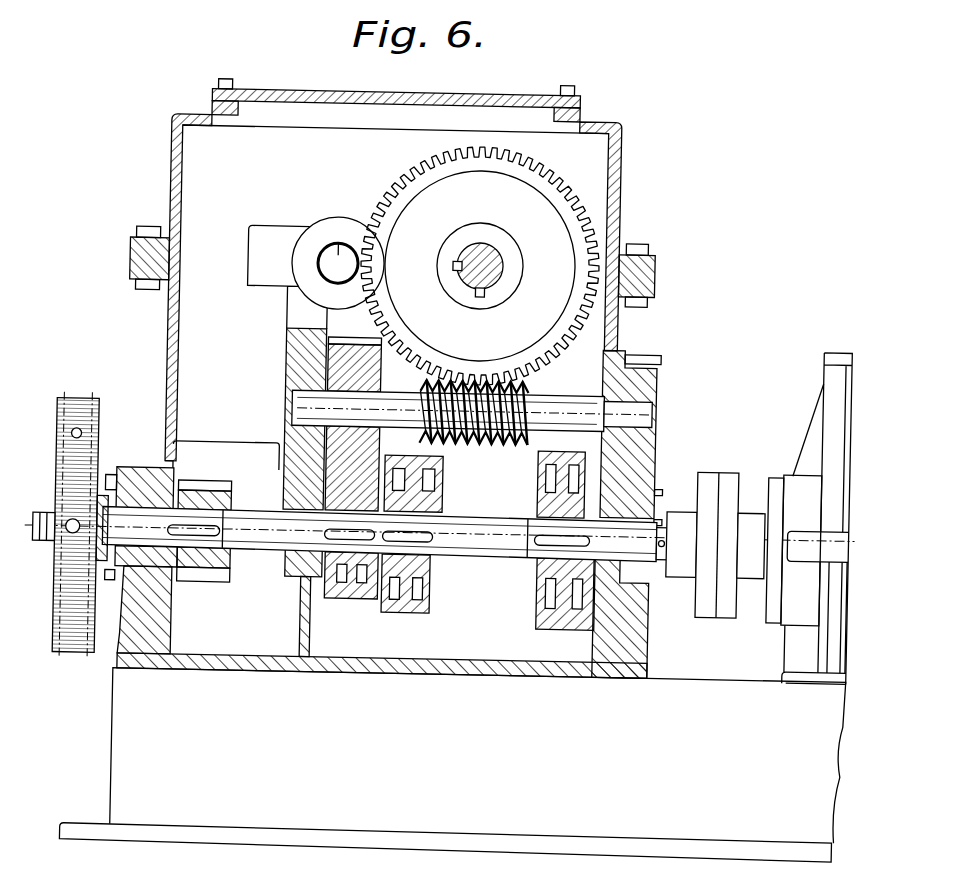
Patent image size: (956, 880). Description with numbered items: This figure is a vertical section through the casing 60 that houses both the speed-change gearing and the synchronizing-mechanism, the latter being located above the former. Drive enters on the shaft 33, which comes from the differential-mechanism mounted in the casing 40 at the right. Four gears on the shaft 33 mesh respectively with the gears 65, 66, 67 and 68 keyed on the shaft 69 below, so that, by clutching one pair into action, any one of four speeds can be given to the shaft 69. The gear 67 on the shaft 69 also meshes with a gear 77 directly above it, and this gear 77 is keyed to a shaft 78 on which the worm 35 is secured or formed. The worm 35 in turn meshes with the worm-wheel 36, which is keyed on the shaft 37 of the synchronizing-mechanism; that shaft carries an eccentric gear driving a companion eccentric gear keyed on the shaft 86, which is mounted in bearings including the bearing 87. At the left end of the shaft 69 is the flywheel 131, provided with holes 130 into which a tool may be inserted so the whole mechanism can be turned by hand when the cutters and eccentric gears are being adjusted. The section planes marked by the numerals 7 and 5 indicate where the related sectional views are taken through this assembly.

The casing 60 is at (621, 148).
The worm-wheel 36 is at (408, 174).
The shaft 37 is at (478, 243).
The bearing 87 is at (298, 252).
The shaft 86 is at (338, 246).
The gear 77 is at (386, 386).
The shaft 78 is at (294, 416).
The worm 35 is at (480, 446).
The gear 67 is at (352, 601).
The gear 66 is at (420, 614).
The gear 65 is at (540, 607).
The shaft 69 is at (252, 554).
The gear 68 is at (199, 586).
The flywheel 131 is at (62, 452).
The holes 130 is at (75, 438).
The shaft 33 is at (666, 516).
The casing 40 is at (822, 384).
The section line 7- 7 is at (735, 268).
The section line 5- 5 is at (847, 568).